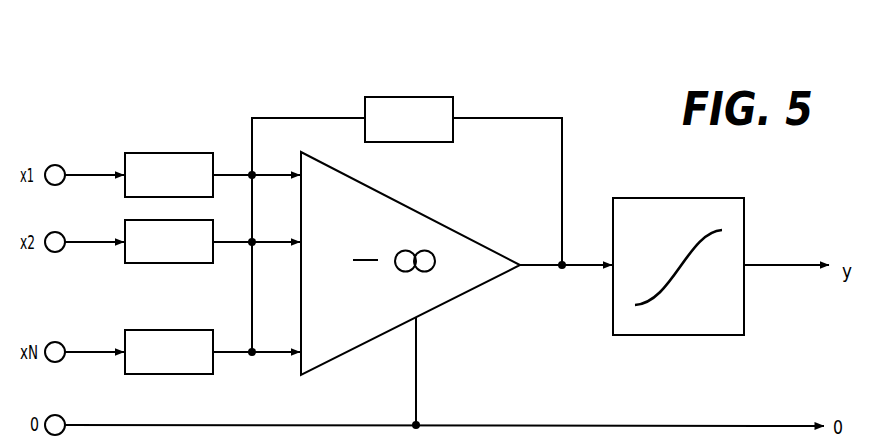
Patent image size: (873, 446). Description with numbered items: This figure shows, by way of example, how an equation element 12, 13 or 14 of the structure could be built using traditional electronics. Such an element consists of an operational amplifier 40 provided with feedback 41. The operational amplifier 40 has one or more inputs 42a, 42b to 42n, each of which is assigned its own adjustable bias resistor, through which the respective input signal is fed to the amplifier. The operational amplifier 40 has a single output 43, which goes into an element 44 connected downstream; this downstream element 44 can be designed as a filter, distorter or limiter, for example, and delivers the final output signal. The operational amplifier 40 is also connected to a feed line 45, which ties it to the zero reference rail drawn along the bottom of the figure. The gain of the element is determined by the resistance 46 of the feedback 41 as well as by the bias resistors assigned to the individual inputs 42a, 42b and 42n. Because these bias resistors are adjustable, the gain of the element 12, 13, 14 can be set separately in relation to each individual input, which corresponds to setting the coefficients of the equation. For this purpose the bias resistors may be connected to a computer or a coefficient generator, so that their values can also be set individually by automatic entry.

The element 12 is at (212, 147).
The element 13 is at (212, 241).
The element 14 is at (212, 352).
The operational amplifier 40 is at (424, 211).
The feedback 41 is at (369, 73).
The input 42a is at (88, 172).
The input 42b is at (88, 240).
The input 42n is at (90, 350).
The output 43 is at (578, 268).
The element connected downstream 44 is at (667, 197).
The feed line 45 is at (416, 393).
The resistance 46 is at (441, 96).